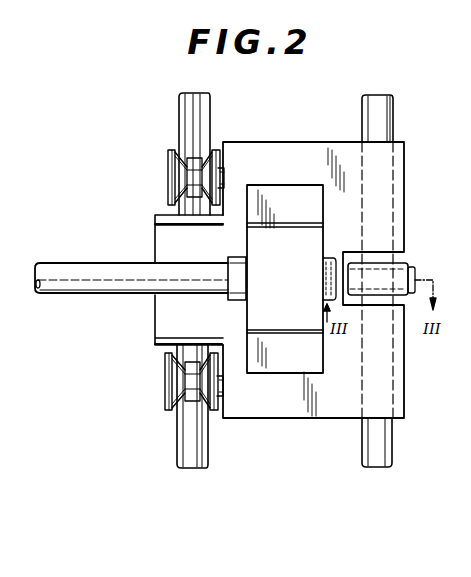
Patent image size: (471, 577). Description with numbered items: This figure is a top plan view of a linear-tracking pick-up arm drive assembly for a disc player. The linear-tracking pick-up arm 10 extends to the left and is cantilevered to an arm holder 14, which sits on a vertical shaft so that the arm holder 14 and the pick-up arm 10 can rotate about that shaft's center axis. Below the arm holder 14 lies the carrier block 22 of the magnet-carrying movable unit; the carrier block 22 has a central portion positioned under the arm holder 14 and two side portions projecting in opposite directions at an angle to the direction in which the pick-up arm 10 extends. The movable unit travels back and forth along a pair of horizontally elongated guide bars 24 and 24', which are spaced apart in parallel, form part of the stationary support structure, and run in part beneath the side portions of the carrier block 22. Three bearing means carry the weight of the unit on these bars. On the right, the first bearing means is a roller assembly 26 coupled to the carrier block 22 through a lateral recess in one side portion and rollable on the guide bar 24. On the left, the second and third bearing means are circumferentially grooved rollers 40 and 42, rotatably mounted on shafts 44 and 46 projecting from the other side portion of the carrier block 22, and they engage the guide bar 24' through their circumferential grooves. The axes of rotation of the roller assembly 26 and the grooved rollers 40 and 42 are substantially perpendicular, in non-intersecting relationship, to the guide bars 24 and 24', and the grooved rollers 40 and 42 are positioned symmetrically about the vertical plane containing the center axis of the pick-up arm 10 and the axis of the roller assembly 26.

The linear-tracking pick-up arm 10 is at (99, 294).
The arm holder 14 is at (297, 374).
The carrier block 22 is at (316, 142).
The guide bar 24 is at (397, 281).
The guide bar 24' is at (169, 280).
The roller assembly 26 is at (418, 263).
The circumferentially grooved roller 40 is at (165, 387).
The circumferentially grooved roller 42 is at (168, 176).
The shaft 44 is at (220, 387).
The shaft 46 is at (222, 178).